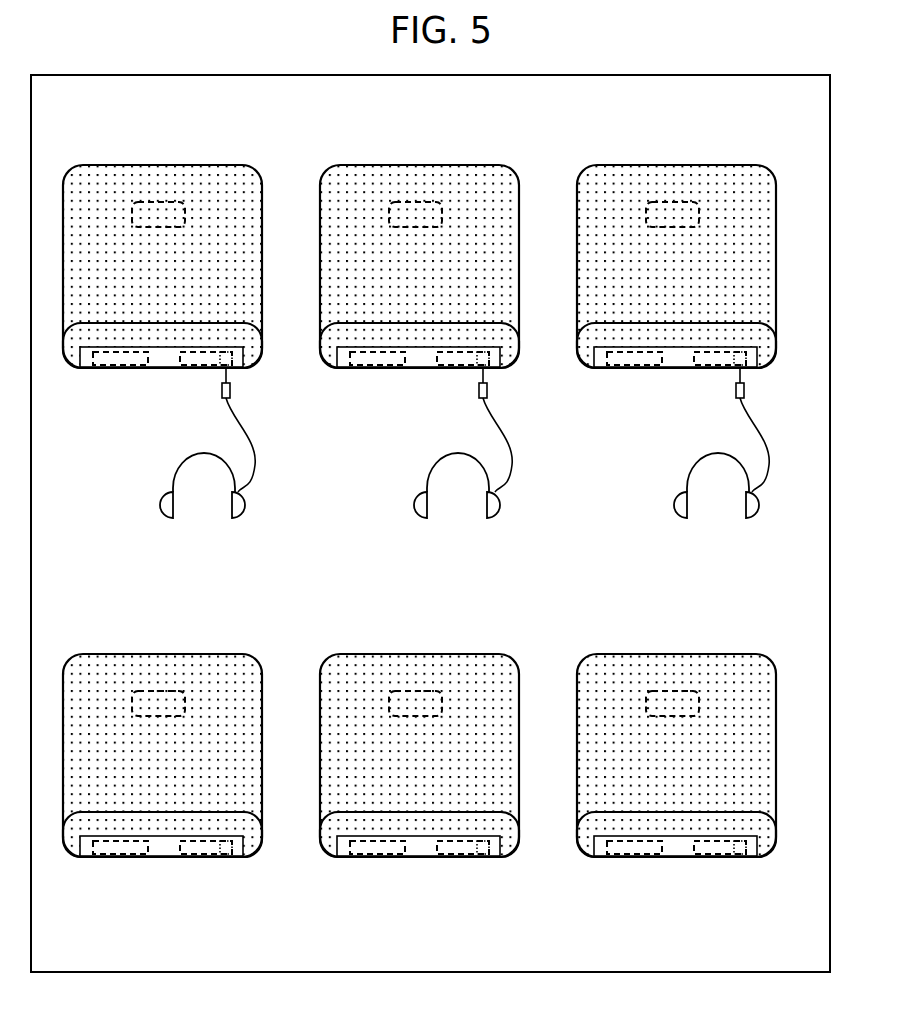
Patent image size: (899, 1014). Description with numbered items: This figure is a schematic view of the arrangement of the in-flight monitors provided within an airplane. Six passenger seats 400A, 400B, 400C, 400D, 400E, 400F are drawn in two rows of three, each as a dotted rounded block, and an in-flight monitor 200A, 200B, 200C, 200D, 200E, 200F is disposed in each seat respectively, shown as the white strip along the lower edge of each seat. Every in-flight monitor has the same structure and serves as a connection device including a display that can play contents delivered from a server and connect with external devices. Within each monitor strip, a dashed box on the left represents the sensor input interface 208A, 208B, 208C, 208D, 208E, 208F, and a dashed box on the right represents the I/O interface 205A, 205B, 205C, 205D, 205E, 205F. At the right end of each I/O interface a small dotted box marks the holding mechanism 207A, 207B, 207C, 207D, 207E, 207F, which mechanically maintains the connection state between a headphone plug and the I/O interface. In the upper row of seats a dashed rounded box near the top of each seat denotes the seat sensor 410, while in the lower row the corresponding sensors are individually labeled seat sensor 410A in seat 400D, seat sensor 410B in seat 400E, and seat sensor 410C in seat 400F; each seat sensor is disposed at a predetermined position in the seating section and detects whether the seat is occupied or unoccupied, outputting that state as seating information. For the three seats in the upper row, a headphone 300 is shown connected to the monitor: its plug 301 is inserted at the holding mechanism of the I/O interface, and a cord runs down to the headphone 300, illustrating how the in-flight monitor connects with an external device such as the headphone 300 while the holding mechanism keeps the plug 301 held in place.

The seat 400A is at (95, 193).
The seat 400B is at (352, 193).
The seat 400C is at (612, 193).
The seat 400D is at (98, 687).
The seat 400E is at (355, 687).
The seat 400F is at (612, 687).
The seat sensor 410 is at (162, 202).
The seat sensor 410A is at (162, 689).
The seat sensor 410B is at (419, 689).
The seat sensor 410C is at (676, 689).
The in-flight monitor 200A is at (162, 358).
The in-flight monitor 200B is at (420, 358).
The in-flight monitor 200C is at (677, 358).
The in-flight monitor 200D is at (162, 847).
The in-flight monitor 200E is at (419, 847).
The in-flight monitor 200F is at (672, 858).
The I/O interface 205A is at (197, 366).
The I/O interface 205B is at (452, 366).
The I/O interface 205C is at (711, 366).
The I/O interface 205D is at (202, 852).
The I/O interface 205E is at (457, 852).
The I/O interface 205F is at (715, 852).
The holding mechanism 207A is at (230, 366).
The holding mechanism 207B is at (487, 366).
The holding mechanism 207C is at (744, 366).
The holding mechanism 207D is at (226, 857).
The holding mechanism 207E is at (483, 857).
The holding mechanism 207F is at (740, 857).
The sensor input interface 208A is at (106, 366).
The sensor input interface 208B is at (366, 366).
The sensor input interface 208C is at (623, 366).
The sensor input interface 208D is at (108, 854).
The sensor input interface 208E is at (365, 854).
The sensor input interface 208F is at (622, 854).
The headphone 300 is at (158, 507).
The plug 301 is at (231, 393).